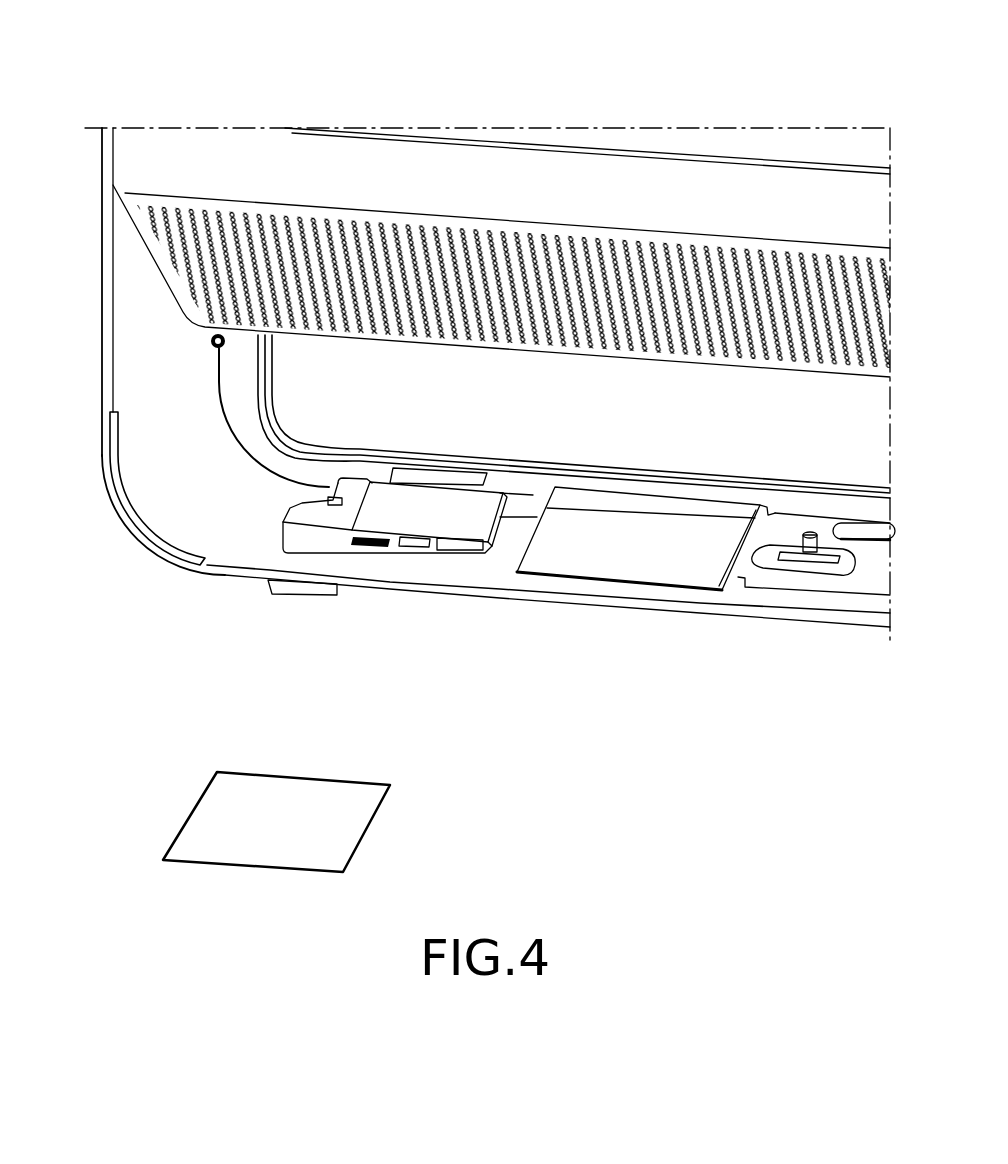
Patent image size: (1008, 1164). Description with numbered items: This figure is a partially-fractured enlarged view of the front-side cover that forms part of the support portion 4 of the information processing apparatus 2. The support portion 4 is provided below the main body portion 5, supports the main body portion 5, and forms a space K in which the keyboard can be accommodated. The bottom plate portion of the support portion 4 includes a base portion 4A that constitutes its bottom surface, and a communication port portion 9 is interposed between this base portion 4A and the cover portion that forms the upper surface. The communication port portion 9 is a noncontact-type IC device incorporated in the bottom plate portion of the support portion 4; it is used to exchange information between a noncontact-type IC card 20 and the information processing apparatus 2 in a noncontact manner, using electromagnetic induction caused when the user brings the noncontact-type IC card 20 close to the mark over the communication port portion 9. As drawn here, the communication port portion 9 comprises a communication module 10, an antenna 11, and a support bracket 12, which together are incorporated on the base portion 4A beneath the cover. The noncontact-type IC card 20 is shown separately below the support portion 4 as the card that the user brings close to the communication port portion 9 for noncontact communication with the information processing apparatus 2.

The information processing apparatus 2 is at (483, 104).
The support portion 4 is at (92, 325).
The base portion 4A is at (488, 590).
The main body portion 5 is at (127, 173).
The space K is at (275, 385).
The communication port portion 9 is at (523, 480).
The communication module 10 is at (425, 508).
The antenna 11 is at (647, 533).
The support bracket 12 is at (800, 573).
The noncontact-type IC card 20 is at (357, 830).